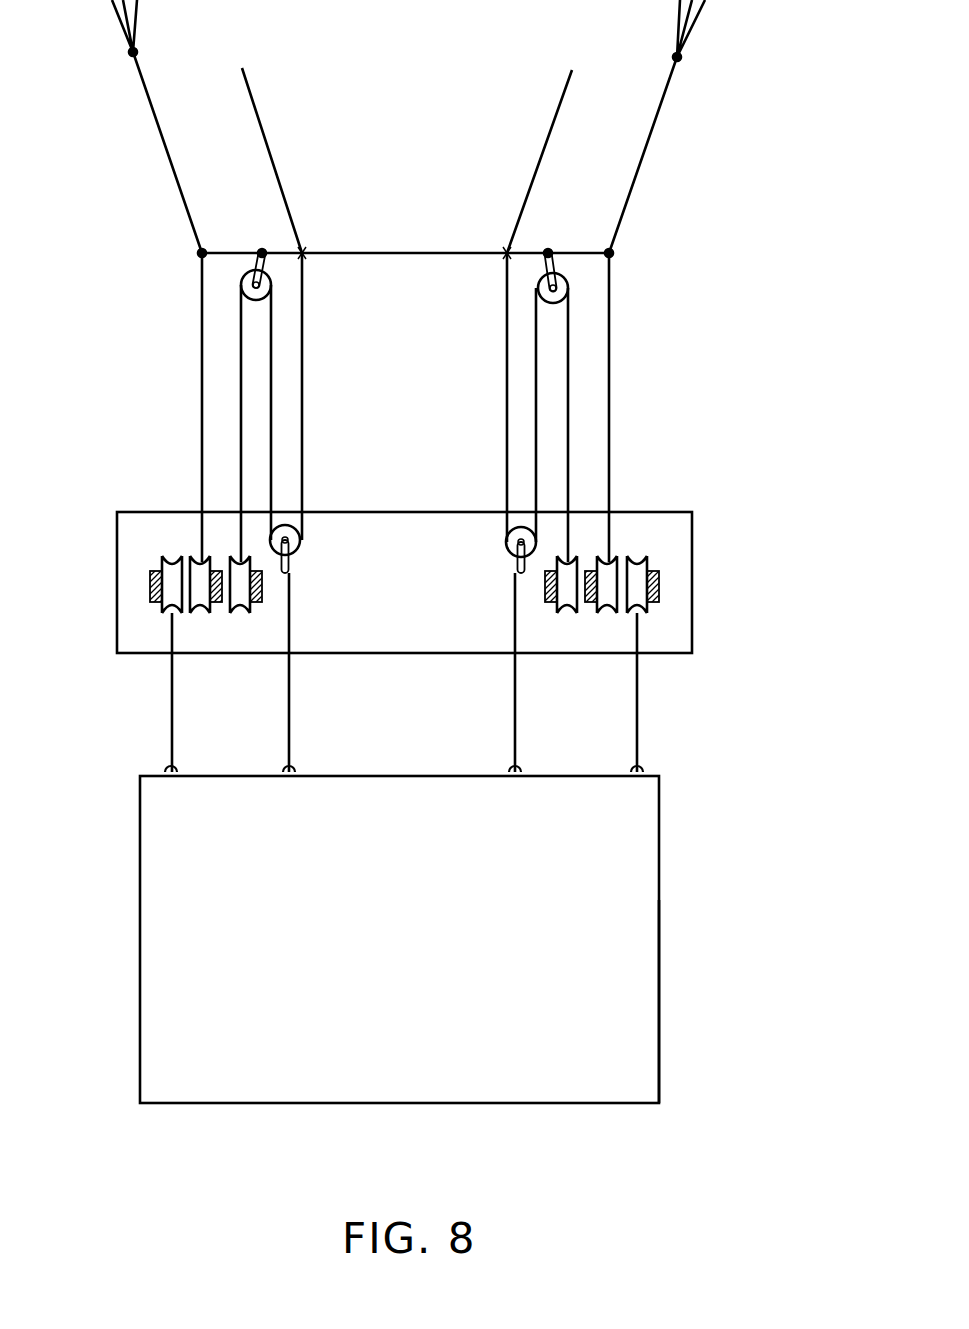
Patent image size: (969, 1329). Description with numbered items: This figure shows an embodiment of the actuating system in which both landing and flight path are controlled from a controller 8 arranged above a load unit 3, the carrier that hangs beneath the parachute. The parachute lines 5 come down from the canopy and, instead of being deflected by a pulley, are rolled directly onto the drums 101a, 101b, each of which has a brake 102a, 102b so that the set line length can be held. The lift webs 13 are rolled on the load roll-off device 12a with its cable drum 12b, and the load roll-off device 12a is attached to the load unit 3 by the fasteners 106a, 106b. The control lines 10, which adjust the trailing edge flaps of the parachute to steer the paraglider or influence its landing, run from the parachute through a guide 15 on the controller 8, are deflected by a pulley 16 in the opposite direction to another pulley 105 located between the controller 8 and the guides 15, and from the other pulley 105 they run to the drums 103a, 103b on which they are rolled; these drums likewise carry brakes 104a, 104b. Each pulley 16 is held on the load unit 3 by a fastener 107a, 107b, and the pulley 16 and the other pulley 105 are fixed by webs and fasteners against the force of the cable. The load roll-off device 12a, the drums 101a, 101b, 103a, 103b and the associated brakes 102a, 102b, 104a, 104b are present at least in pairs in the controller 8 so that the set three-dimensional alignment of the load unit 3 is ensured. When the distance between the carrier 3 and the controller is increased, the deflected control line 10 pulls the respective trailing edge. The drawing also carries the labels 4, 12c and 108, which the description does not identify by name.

The load unit 3 is at (140, 828).
The load 4 is at (640, 1032).
The parachute lines 5 is at (162, 142).
The controller 8 is at (697, 607).
The control lines 10 is at (258, 107).
The load roll-off device 12a is at (410, 570).
The cable drum 12b is at (162, 608).
The brake pad 12c is at (150, 573).
The lift webs 13 is at (167, 678).
The guide 15 is at (303, 253).
The pulley 16 is at (300, 550).
The drum 101a is at (198, 562).
The drum 101b is at (610, 562).
The brake 102a is at (591, 603).
The brake 102b is at (214, 602).
The third drum 103a is at (247, 610).
The drum 103b is at (563, 610).
The brake 104a is at (262, 592).
The brake 104b is at (545, 592).
The other pulley 105 is at (243, 282).
The fastener 106a is at (163, 768).
The fastener 106b is at (640, 770).
The fastener 107a is at (281, 770).
The fastener 107b is at (525, 770).
The wire 108 is at (292, 692).